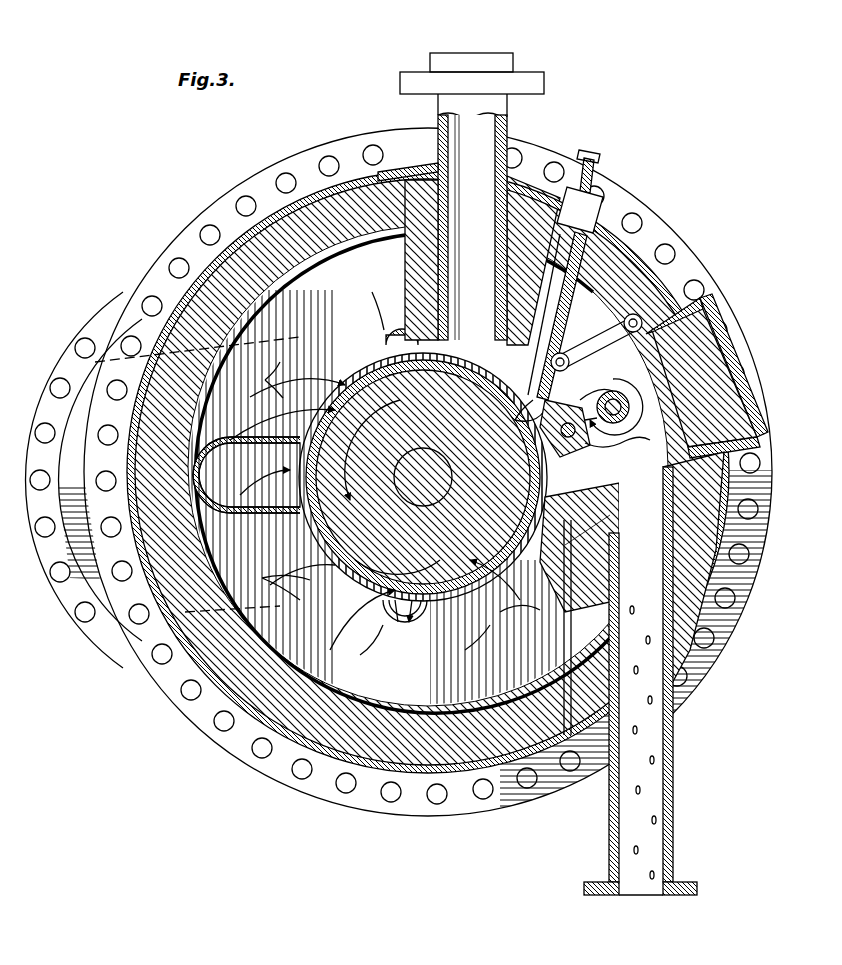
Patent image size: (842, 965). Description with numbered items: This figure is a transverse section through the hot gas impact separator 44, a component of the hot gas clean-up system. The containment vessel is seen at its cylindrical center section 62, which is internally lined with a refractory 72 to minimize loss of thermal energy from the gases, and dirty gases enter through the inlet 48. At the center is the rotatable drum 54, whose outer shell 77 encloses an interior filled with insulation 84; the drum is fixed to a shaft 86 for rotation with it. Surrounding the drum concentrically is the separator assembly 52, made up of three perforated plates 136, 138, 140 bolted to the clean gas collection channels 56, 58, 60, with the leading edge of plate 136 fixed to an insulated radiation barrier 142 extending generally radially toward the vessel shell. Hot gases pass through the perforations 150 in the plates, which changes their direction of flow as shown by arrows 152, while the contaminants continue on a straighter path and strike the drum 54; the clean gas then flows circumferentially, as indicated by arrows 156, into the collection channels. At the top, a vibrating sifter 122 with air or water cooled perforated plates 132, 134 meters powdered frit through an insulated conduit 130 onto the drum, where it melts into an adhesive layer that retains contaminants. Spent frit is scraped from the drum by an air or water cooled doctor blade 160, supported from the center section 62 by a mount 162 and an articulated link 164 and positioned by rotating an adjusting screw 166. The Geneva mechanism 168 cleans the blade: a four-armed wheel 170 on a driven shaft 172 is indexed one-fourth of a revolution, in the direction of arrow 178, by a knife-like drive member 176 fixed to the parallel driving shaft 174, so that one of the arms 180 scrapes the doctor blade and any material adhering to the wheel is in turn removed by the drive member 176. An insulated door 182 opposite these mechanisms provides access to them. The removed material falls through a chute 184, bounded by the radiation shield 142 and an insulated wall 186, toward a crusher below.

The hot gas impact separator 44 is at (192, 165).
The inlet 48 is at (78, 352).
The separator assembly 52 is at (252, 482).
The rotatable drum 54 is at (560, 500).
The collection channel 56 is at (402, 326).
The collection channel 58 is at (196, 462).
The collection channel 60 is at (395, 628).
The cylindrical center section 62 is at (212, 210).
The refractory 72 is at (190, 281).
The outer shell 77 is at (548, 548).
The insulation 84 is at (423, 477).
The shaft 86 is at (423, 477).
The vibrating sifter 122 is at (420, 52).
The insulated conduit 130 is at (422, 168).
The perforated plate 132 is at (513, 60).
The perforated plate 134 is at (544, 82).
The perforated plate 136 is at (503, 617).
The perforated plate 138 is at (300, 543).
The perforated plate 140 is at (395, 318).
The insulated radiation barrier 142 is at (565, 650).
The perforations 150 is at (318, 387).
The arrows 152 is at (357, 514).
The arrows 156 is at (312, 473).
The doctor blade 160 is at (556, 300).
The mount 162 is at (598, 206).
The articulated link 164 is at (612, 335).
The adjusting screw 166 is at (597, 152).
The Geneva mechanism 168 is at (600, 448).
The four-armed wheel 170 is at (565, 458).
The driven shaft 172 is at (548, 398).
The driving shaft 174 is at (628, 400).
The knife-like drive member 176 is at (648, 444).
The arrow 178 is at (545, 392).
The arms 180 is at (600, 380).
The insulated door 182 is at (716, 335).
The chute 184 is at (676, 757).
The insulated wall 186 is at (645, 527).